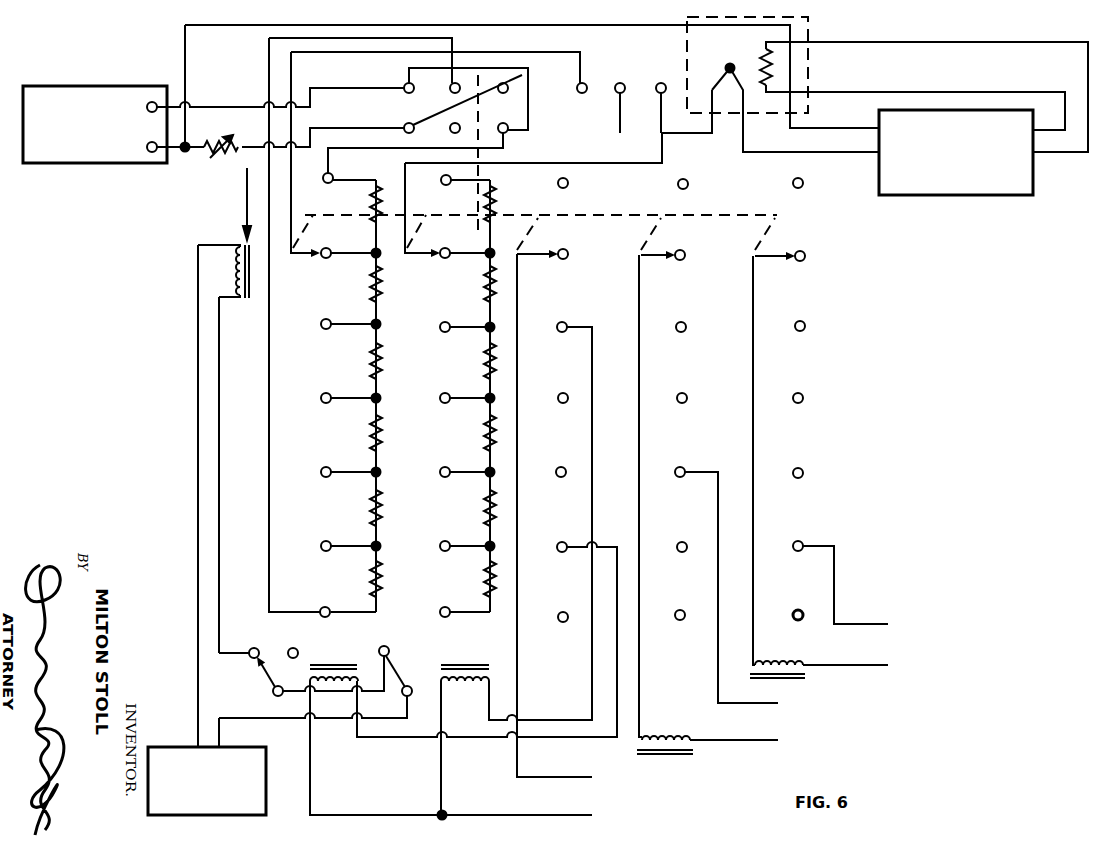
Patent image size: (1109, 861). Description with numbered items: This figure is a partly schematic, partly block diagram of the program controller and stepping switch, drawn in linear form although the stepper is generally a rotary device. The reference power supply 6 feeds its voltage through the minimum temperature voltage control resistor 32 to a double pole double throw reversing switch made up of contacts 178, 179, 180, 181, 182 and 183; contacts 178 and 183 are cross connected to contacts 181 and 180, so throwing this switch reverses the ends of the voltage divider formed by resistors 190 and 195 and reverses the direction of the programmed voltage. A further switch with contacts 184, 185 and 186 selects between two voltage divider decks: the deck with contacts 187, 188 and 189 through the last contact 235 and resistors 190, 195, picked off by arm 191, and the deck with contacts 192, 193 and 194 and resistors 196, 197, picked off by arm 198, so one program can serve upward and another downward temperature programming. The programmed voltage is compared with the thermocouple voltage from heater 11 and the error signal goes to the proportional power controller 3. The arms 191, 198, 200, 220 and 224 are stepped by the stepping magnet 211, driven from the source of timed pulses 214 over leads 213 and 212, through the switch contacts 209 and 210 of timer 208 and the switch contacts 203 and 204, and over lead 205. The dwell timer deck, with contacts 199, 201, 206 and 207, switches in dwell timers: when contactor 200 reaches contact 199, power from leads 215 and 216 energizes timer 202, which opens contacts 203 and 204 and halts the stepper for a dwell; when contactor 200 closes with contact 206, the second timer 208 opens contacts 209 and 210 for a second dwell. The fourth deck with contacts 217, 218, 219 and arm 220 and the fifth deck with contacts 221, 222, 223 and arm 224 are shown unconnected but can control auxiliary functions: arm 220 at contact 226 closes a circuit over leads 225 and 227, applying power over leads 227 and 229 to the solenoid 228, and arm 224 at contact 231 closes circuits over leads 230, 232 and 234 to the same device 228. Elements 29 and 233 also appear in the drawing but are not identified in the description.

The proportional power controller 3 is at (916, 195).
The reference power supply 6 is at (63, 163).
The heater 11 is at (760, 68).
The switch 29 is at (726, 33).
The minimum temperature voltage control resistor 32 is at (216, 135).
The reversing switch contact 178 is at (403, 85).
The reversing switch contact 179 is at (459, 82).
The reversing switch contact 180 is at (507, 83).
The reversing switch contact 181 is at (509, 131).
The reversing switch contact 182 is at (458, 134).
The reversing switch contact 183 is at (404, 125).
The program selector switch contact 184 is at (577, 90).
The program selector switch contact 185 is at (616, 84).
The program selector switch contact 186 is at (657, 84).
The first stepper contact 187 is at (334, 175).
The stepper contact 188 is at (323, 258).
The stepper contact 189 is at (321, 329).
The voltage divider resistor 190 is at (372, 209).
The stepping switch arm 191 is at (316, 250).
The stepper contact 192 is at (443, 185).
The stepper contact 193 is at (441, 258).
The stepper contact 194 is at (440, 331).
The voltage divider resistor 195 is at (371, 292).
The voltage divider resistor 196 is at (496, 209).
The voltage divider resistor 197 is at (484, 292).
The stepping switch arm 198 is at (436, 250).
The dwell timer contact 199 is at (557, 331).
The contactor 200 is at (557, 260).
The dwell timer deck connection 201 is at (598, 292).
The time delay relay or timer 202 is at (464, 681).
The timer switch contact 203 is at (391, 701).
The timer switch contact 204 is at (390, 650).
The lead 205 is at (219, 730).
The dwell timer contact 206 is at (557, 551).
The dwell timer deck connection 207 is at (609, 545).
The second delay relay or timer 208 is at (353, 664).
The timer switch contact 209 is at (272, 692).
The timer switch contact 210 is at (250, 658).
The stepping magnet 211 is at (238, 244).
The lead 212 is at (219, 355).
The lead 213 is at (197, 350).
The source of timed pulses 214 is at (215, 815).
The lead 215 is at (543, 777).
The lead 216 is at (548, 815).
The auxiliary deck contact 217 is at (688, 180).
The auxiliary deck contact 218 is at (684, 250).
The auxiliary deck contact 219 is at (686, 323).
The fourth deck arm 220 is at (678, 260).
The auxiliary deck contact 221 is at (803, 180).
The auxiliary deck contact 222 is at (804, 251).
The auxiliary deck contact 223 is at (805, 322).
The fifth deck arm 224 is at (799, 261).
The lead 225 is at (641, 365).
The auxiliary contact 226 is at (683, 467).
The lead 227 is at (718, 664).
The solenoid 228 is at (673, 737).
The lead 229 is at (725, 741).
The lead 230 is at (755, 448).
The auxiliary contact 231 is at (803, 542).
The lead 232 is at (857, 624).
The relay winding 233 is at (776, 658).
The lead 234 is at (858, 665).
The last stepper contact 235 is at (322, 606).